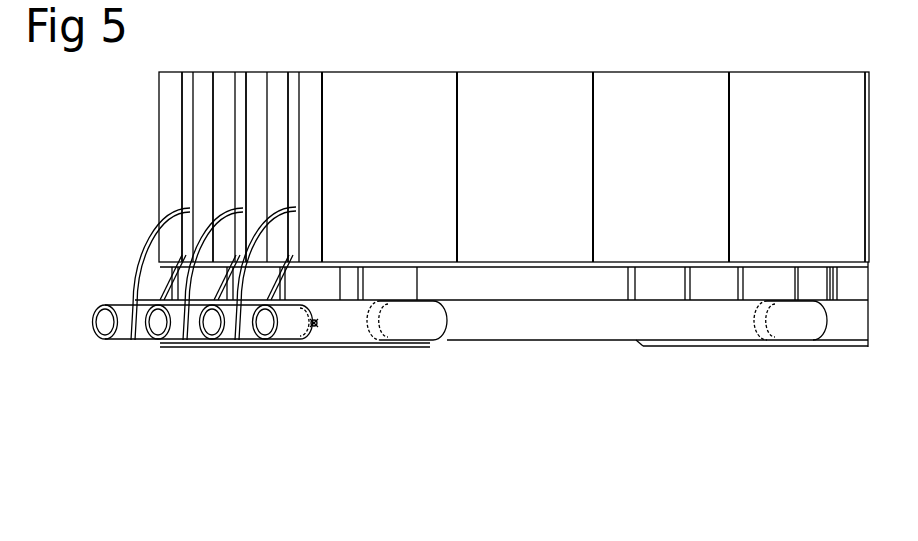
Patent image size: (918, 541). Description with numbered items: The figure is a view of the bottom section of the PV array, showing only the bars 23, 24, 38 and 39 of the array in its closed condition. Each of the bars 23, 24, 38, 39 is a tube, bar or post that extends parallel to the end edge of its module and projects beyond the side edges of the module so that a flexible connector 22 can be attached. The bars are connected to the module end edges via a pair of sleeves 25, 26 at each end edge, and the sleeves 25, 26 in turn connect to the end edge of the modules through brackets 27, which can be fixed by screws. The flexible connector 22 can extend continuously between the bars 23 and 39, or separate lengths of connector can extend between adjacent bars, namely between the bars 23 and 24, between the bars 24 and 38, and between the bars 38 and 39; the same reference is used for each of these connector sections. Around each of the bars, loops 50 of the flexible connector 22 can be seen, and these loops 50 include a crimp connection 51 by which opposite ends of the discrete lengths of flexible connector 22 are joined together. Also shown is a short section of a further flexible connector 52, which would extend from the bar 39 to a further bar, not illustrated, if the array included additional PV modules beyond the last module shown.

The flexible connector 22 is at (263, 235).
The bar 23 is at (110, 343).
The bar 24 is at (160, 343).
The sleeve 25 is at (793, 323).
The sleeve 26 is at (417, 322).
The bracket 27 is at (763, 283).
The bar 38 is at (233, 343).
The bar 39 is at (287, 343).
The loop 50 is at (191, 343).
The crimp connection 51 is at (314, 330).
The further flexible connector 52 is at (320, 327).